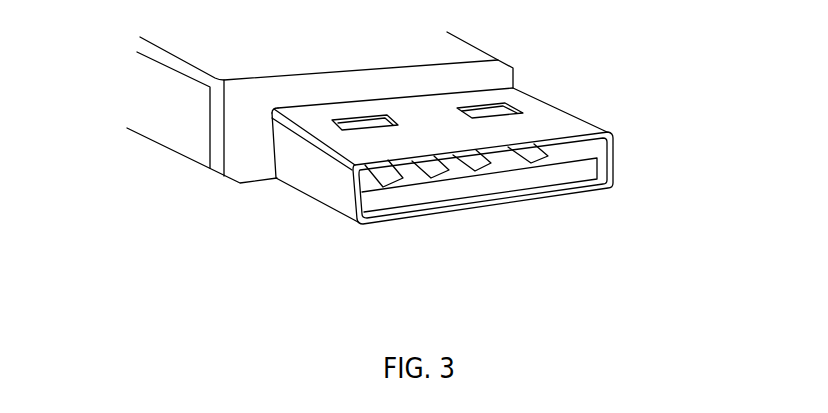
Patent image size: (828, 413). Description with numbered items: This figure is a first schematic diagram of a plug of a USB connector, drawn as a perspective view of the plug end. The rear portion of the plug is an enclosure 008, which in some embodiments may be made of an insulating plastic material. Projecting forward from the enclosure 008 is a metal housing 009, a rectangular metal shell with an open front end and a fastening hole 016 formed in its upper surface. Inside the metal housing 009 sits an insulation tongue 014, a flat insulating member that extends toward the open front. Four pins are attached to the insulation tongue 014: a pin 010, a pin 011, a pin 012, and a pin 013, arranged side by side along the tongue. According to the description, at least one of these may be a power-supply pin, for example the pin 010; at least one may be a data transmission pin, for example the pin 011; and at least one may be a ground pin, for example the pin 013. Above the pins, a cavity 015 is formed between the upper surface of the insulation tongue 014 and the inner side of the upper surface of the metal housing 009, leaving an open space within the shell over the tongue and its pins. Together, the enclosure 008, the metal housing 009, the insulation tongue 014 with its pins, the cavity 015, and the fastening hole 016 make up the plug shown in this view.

The enclosure 008 is at (237, 43).
The metal housing 009 is at (385, 143).
The pin 010 is at (383, 188).
The pin 011 is at (428, 170).
The pin 012 is at (478, 157).
The pin 013 is at (531, 157).
The insulation tongue 014 is at (578, 173).
The cavity 015 is at (572, 164).
The fastening hole 016 is at (504, 103).